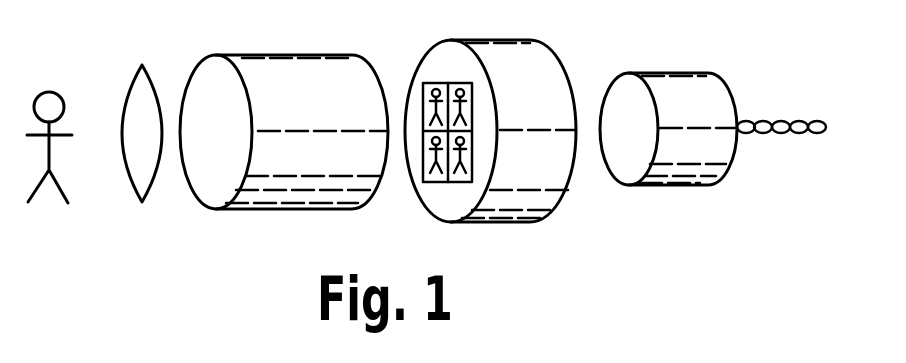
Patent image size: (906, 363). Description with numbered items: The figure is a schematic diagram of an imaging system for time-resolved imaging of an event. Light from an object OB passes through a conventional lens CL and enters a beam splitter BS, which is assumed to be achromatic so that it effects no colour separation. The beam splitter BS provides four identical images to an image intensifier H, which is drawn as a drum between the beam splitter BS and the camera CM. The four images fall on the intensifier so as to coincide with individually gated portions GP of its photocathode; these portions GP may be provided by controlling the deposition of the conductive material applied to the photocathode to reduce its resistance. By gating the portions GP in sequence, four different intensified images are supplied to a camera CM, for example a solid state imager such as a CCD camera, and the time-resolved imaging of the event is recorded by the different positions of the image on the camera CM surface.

The object OB is at (49, 92).
The conventional lens CL is at (150, 72).
The beam splitter BS is at (303, 63).
The hologram drum H is at (497, 52).
The individually gated portions GP is at (426, 152).
The camera CM is at (677, 83).